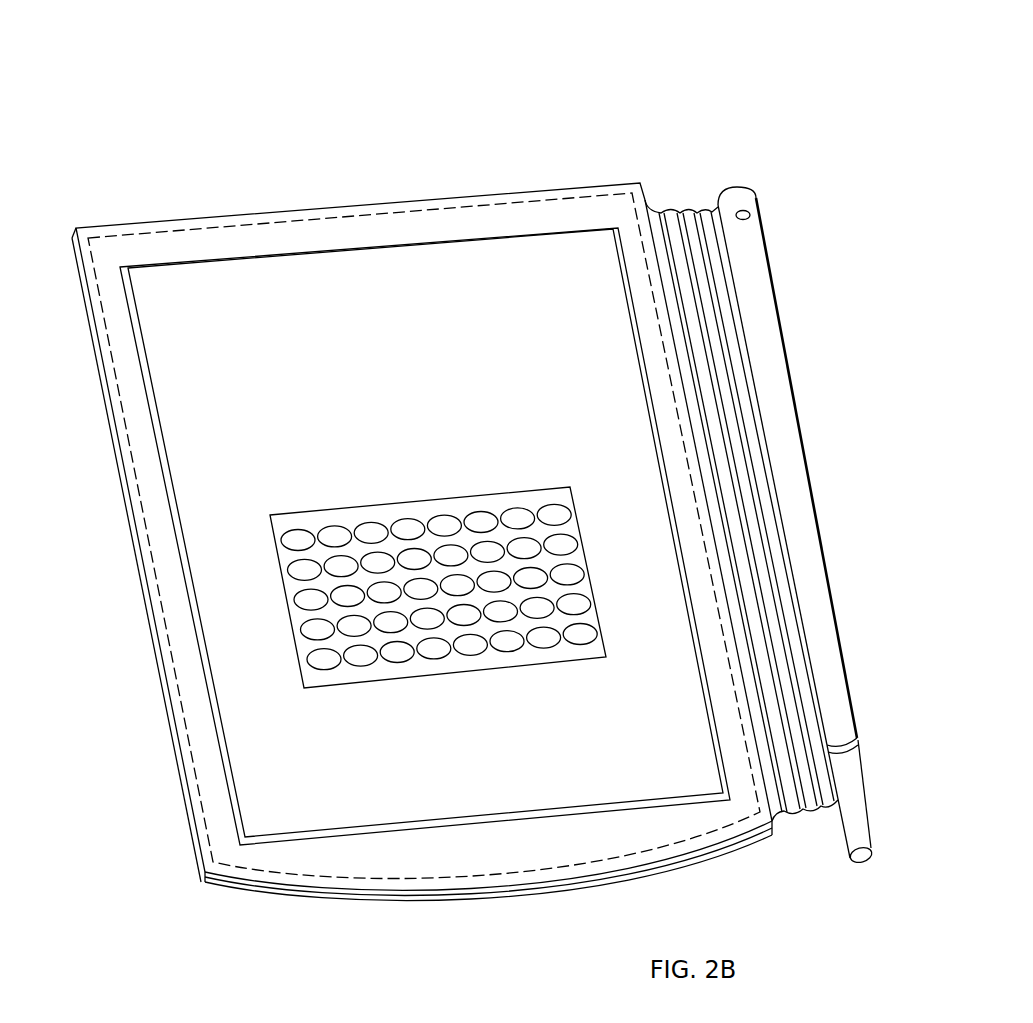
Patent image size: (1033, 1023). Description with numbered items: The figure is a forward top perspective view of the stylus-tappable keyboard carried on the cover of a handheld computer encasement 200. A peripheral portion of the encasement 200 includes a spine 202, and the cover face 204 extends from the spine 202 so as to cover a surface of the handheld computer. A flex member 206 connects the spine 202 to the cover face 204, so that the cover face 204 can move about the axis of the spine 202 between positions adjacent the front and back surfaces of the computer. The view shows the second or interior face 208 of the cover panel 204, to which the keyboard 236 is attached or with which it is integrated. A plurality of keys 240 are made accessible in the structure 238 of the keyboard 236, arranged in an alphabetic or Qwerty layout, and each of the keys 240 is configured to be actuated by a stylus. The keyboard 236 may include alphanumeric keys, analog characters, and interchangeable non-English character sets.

The encasement 200 is at (757, 118).
The spine 202 is at (824, 452).
The cover face 204 is at (372, 177).
The flex member 206 is at (683, 195).
The interior face 208 is at (462, 298).
The stylus-tappable keyboard 236 is at (293, 588).
The structure 238 is at (294, 633).
The keys 240 is at (305, 662).